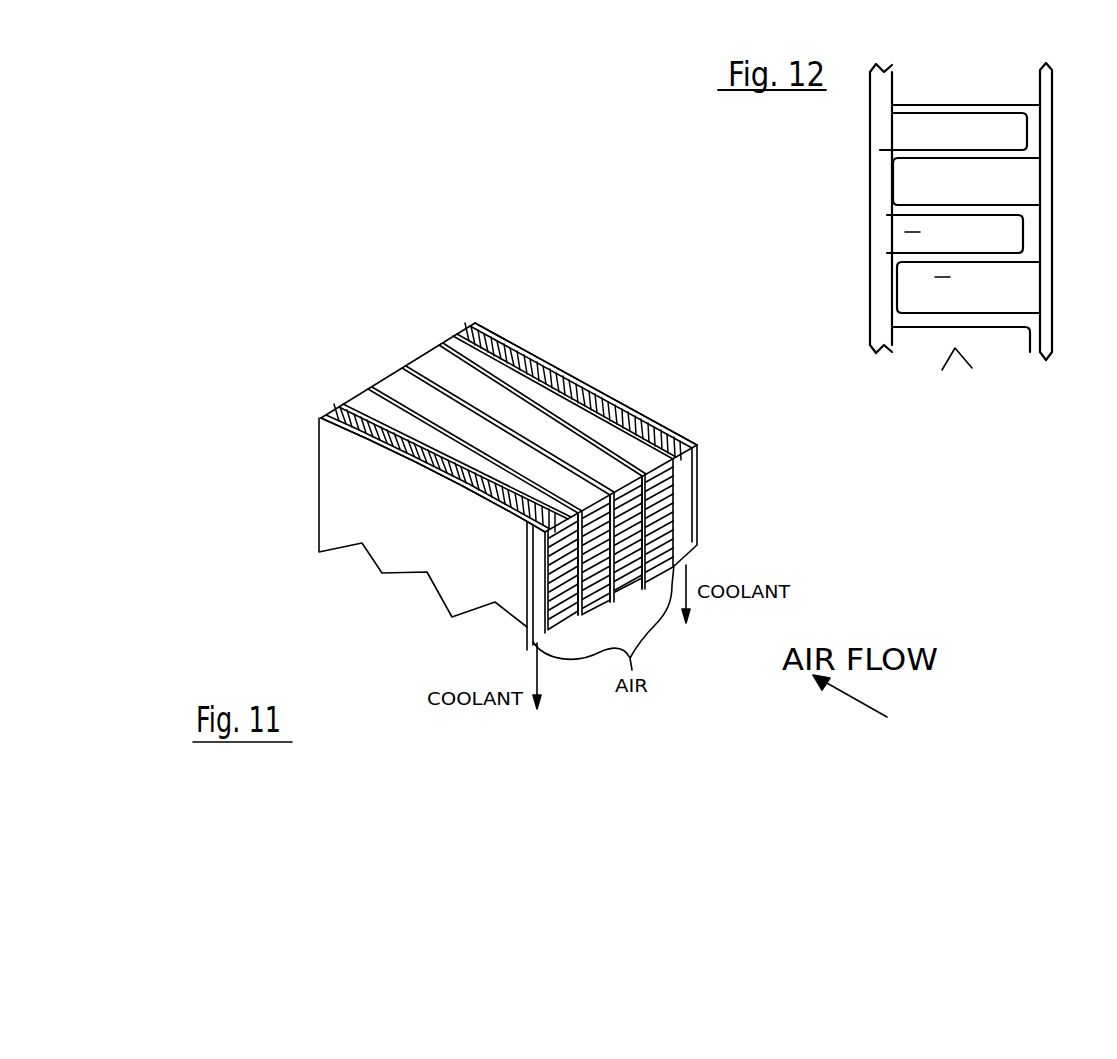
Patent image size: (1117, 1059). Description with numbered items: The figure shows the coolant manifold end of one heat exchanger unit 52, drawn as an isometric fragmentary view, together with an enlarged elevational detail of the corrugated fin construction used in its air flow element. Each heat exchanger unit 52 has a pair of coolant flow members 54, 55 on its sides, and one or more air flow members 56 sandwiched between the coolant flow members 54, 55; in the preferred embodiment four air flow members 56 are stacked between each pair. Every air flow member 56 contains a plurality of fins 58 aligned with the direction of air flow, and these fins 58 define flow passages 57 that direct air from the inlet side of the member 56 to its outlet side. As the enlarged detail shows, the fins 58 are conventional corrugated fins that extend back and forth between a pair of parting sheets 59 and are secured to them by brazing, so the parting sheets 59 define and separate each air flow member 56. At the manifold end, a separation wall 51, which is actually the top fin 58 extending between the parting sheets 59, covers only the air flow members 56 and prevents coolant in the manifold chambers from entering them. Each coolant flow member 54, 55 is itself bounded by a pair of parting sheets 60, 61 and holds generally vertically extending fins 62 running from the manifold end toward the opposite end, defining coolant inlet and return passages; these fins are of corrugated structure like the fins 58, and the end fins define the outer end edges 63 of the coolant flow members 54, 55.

In FIG. 11, the separation wall 51 is at (648, 437).
In FIG. 11, the heat exchanger unit 52 is at (353, 399).
In FIG. 11, the coolant flow member 54 is at (332, 416).
In FIG. 11, the coolant flow member 55 is at (474, 323).
In FIG. 11, the air flow member 56 is at (677, 566).
In FIG. 12, the air flow member 56 is at (955, 348).
In FIG. 12, the flow passage 57 is at (950, 277).
In FIG. 11, the fin 58 is at (540, 643).
In FIG. 12, the fin 58 is at (950, 105).
In FIG. 11, the parting sheet 59 is at (612, 484).
In FIG. 12, the parting sheet 59 is at (870, 187).
In FIG. 11, the parting sheet 60 is at (570, 410).
In FIG. 11, the parting sheet 61 is at (637, 436).
In FIG. 11, the vertically extending fin 62 is at (489, 327).
In FIG. 11, the outer end edge 63 is at (685, 508).